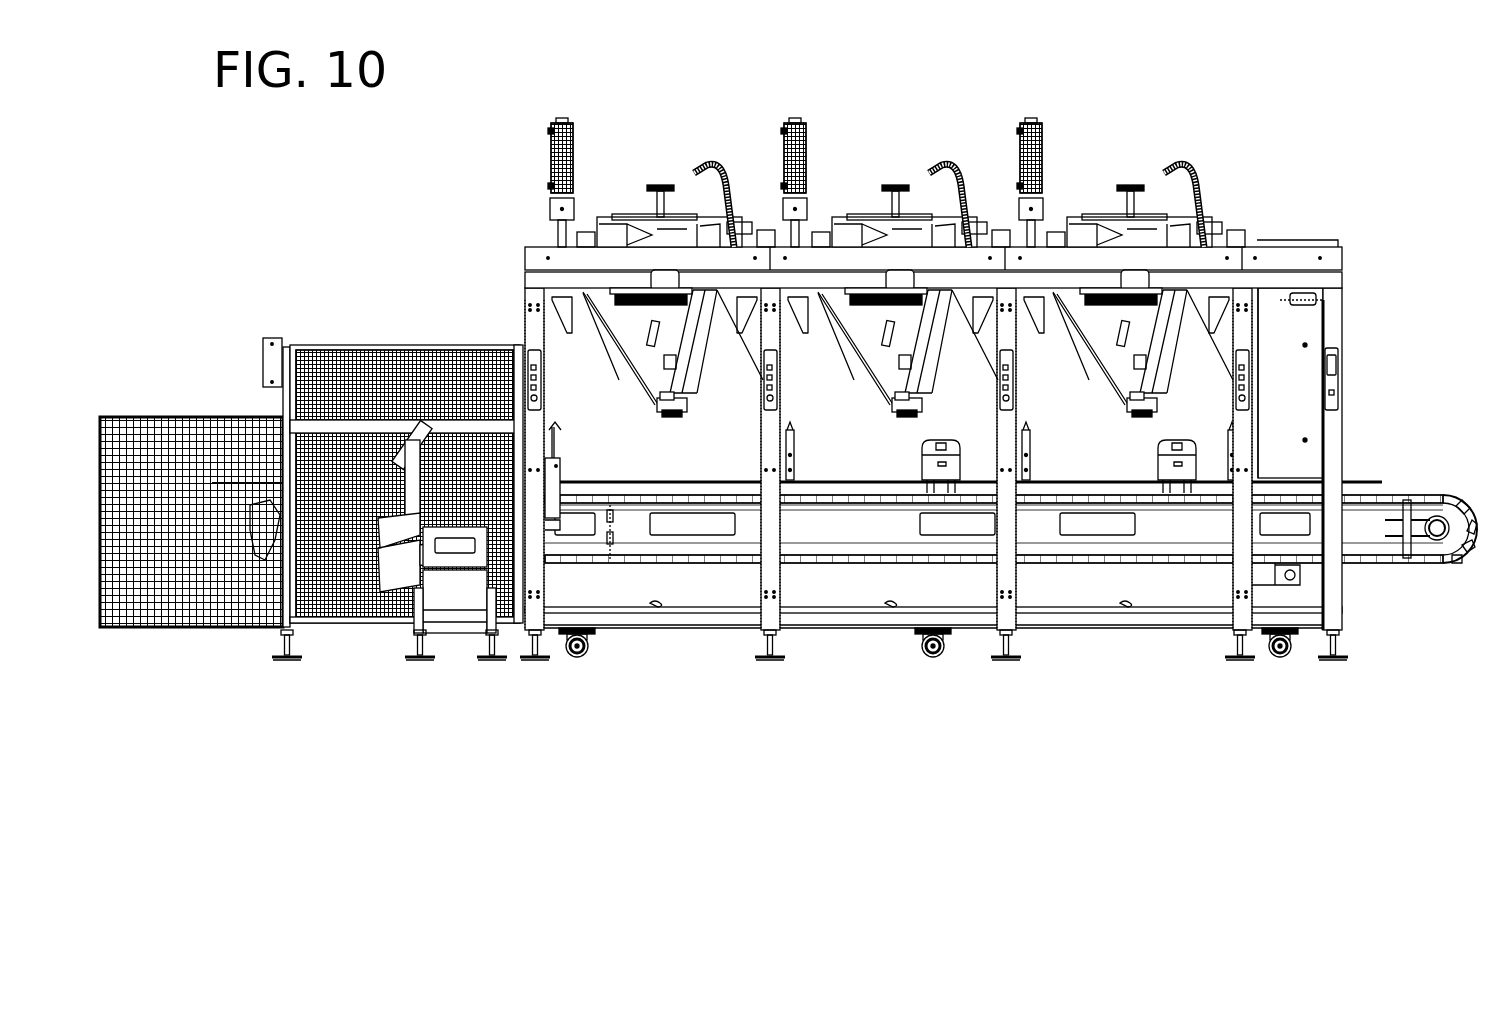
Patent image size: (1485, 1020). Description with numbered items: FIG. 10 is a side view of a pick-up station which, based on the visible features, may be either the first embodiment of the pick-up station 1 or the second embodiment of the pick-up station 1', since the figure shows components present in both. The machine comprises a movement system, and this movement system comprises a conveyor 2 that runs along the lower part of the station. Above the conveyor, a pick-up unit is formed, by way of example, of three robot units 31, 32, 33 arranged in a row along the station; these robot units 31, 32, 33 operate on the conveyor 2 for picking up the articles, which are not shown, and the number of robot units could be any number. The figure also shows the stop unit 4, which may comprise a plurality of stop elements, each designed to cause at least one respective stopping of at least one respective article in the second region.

The pick-up station 1 is at (788, 378).
The pick-up station 1' is at (788, 378).
The conveyor 2 is at (1397, 494).
The robot unit 31 is at (633, 199).
The robot unit 32 is at (872, 213).
The robot unit 33 is at (1105, 216).
The stop unit 4 is at (565, 490).